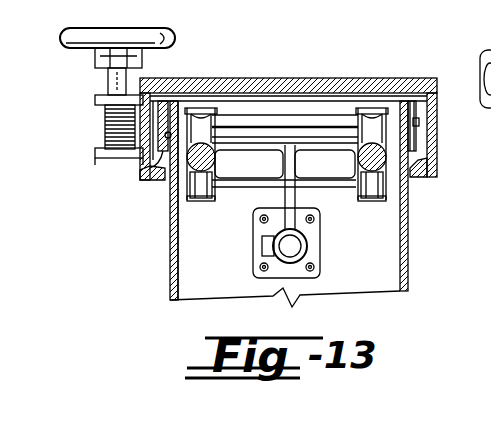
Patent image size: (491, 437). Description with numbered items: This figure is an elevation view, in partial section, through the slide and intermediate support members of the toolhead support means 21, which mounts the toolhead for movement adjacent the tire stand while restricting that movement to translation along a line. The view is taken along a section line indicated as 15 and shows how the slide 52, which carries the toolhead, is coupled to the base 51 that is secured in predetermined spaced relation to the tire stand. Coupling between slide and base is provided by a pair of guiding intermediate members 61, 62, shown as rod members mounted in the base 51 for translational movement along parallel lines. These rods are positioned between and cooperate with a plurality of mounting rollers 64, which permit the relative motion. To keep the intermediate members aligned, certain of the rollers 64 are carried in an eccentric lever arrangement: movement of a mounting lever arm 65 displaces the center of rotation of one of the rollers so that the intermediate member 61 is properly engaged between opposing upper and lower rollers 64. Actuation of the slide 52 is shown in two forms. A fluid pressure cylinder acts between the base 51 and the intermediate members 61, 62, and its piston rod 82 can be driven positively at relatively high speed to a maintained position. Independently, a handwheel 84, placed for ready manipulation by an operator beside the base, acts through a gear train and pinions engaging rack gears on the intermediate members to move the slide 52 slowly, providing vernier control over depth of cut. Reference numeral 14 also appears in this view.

The clamp handle assembly 14 is at (63, 55).
The section line 15 is at (170, 78).
The toolhead support means 21 is at (170, 277).
The base 51 is at (408, 262).
The slide 52 is at (291, 78).
The guiding intermediate member 61 is at (216, 162).
The guiding intermediate member 62 is at (357, 162).
The mounting rollers 64 is at (203, 186).
The mounting lever arm 65 is at (140, 168).
The piston rod 82 is at (256, 256).
The handwheel 84 is at (160, 30).